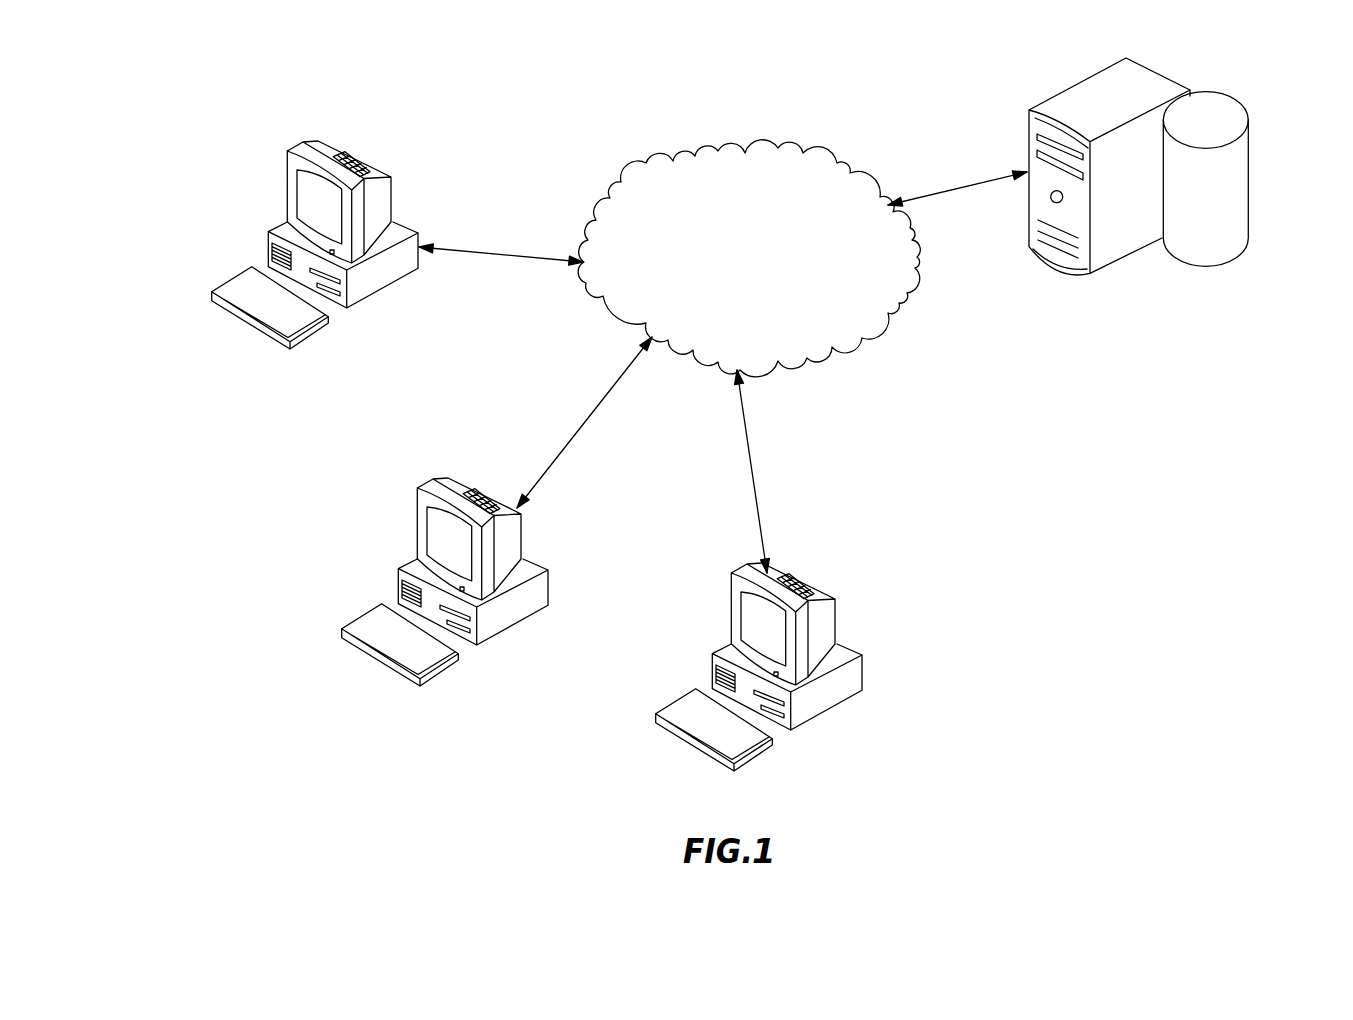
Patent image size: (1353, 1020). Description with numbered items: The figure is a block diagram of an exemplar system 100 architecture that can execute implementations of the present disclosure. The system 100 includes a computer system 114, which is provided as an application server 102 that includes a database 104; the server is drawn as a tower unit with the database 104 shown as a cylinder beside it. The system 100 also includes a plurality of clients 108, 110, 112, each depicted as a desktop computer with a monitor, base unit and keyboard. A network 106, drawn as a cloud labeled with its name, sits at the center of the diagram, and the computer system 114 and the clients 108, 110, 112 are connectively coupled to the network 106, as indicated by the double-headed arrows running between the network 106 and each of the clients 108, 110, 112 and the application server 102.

The system 100 is at (153, 158).
The application server 102 is at (1127, 56).
The database 104 is at (1248, 112).
The network 106 is at (752, 146).
The client 108 is at (391, 178).
The client 110 is at (548, 569).
The client 112 is at (862, 654).
The computer system 114 is at (1171, 185).